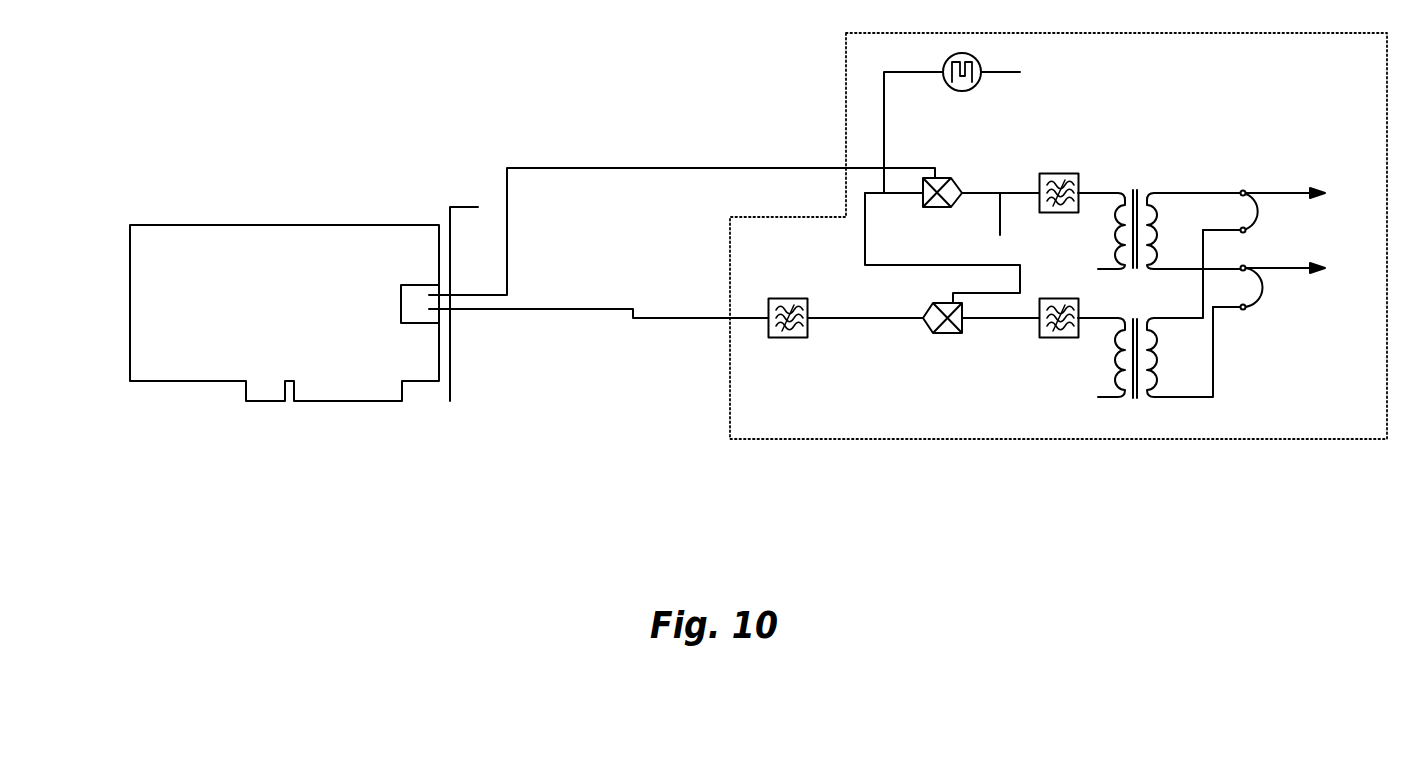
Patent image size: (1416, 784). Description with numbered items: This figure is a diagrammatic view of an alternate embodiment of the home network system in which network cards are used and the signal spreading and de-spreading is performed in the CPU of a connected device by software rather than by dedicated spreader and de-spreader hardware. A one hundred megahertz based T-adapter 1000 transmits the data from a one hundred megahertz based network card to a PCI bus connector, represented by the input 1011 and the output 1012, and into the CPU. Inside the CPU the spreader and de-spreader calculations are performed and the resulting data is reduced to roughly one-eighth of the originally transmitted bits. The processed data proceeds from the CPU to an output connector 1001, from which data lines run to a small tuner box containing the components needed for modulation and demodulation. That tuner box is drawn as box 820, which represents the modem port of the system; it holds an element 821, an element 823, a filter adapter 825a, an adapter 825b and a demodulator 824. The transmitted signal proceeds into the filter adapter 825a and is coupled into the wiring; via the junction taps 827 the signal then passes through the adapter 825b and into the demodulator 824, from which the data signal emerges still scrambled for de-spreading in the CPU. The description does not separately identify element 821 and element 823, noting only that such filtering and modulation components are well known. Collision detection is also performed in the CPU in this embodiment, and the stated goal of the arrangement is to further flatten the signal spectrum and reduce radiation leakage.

The T-adapter 1000 is at (320, 420).
The output connector 1001 is at (421, 302).
The input 1011 is at (653, 168).
The output 1012 is at (595, 313).
The box 820 is at (884, 452).
The oscillator 821 is at (962, 91).
The first mixer 823 is at (944, 178).
The demodulator 824 is at (955, 335).
The filter adapter 825a is at (1137, 187).
The adapter 825b is at (1135, 402).
The junction taps 827 is at (1272, 215).